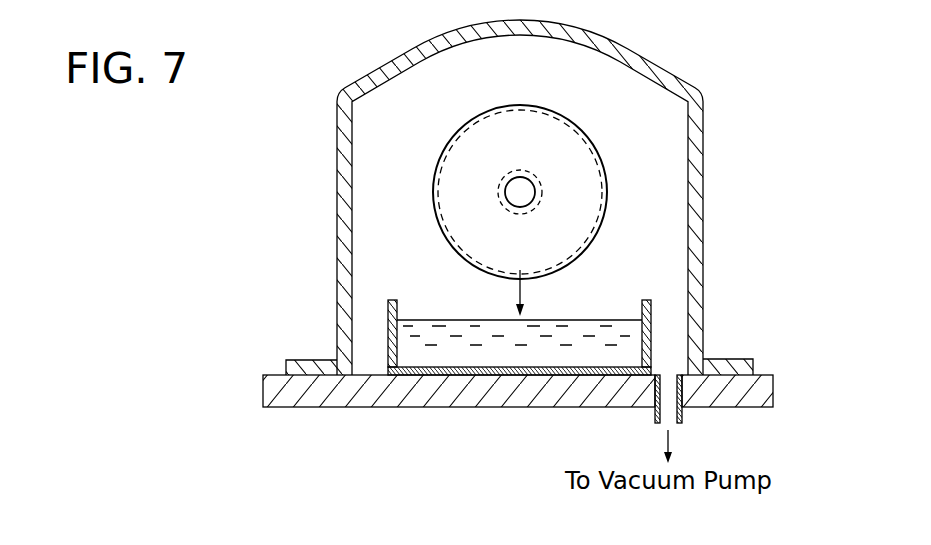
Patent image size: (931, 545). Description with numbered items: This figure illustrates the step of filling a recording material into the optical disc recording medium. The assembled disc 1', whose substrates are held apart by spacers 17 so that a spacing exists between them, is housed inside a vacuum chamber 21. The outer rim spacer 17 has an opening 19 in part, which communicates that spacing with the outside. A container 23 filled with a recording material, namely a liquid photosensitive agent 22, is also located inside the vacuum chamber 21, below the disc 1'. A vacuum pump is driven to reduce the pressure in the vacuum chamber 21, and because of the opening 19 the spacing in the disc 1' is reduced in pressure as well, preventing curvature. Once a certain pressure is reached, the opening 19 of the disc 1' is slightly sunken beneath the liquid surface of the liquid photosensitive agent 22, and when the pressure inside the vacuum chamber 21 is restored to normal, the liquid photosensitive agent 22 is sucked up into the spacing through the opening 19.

The disc 1' is at (496, 192).
The spacer 17 is at (433, 195).
The opening 19 is at (520, 277).
The vacuum chamber 21 is at (693, 195).
The liquid photosensitive agent 22 is at (603, 327).
The container 23 is at (388, 332).